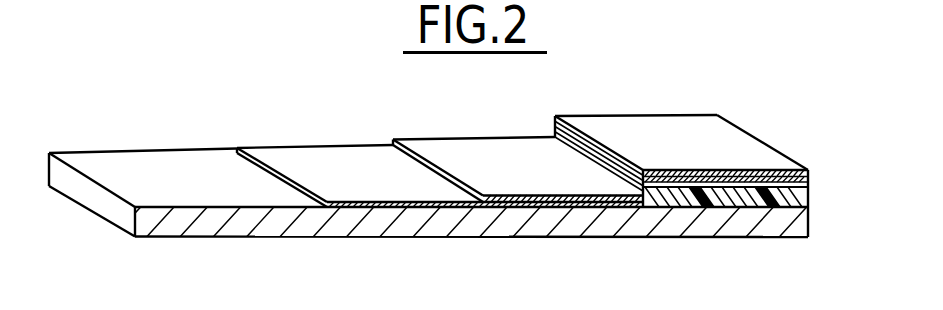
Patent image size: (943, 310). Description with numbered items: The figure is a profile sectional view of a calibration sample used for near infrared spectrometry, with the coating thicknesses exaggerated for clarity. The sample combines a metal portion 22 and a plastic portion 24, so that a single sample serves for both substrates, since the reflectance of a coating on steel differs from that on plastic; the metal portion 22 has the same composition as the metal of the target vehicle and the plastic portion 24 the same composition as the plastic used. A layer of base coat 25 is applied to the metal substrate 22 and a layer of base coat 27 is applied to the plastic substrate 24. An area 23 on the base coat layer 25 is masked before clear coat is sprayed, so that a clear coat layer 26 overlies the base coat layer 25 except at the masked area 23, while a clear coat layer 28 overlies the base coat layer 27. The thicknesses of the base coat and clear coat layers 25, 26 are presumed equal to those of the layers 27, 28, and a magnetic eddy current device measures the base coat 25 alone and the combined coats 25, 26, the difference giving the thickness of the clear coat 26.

The metal portion 22 is at (808, 228).
The masked area 23 is at (317, 147).
The plastic portion 24 is at (808, 195).
The base coat layer 25 is at (171, 157).
The clear coat layer 26 is at (472, 142).
The base coat layer 27 is at (808, 177).
The clear coat layer 28 is at (806, 168).